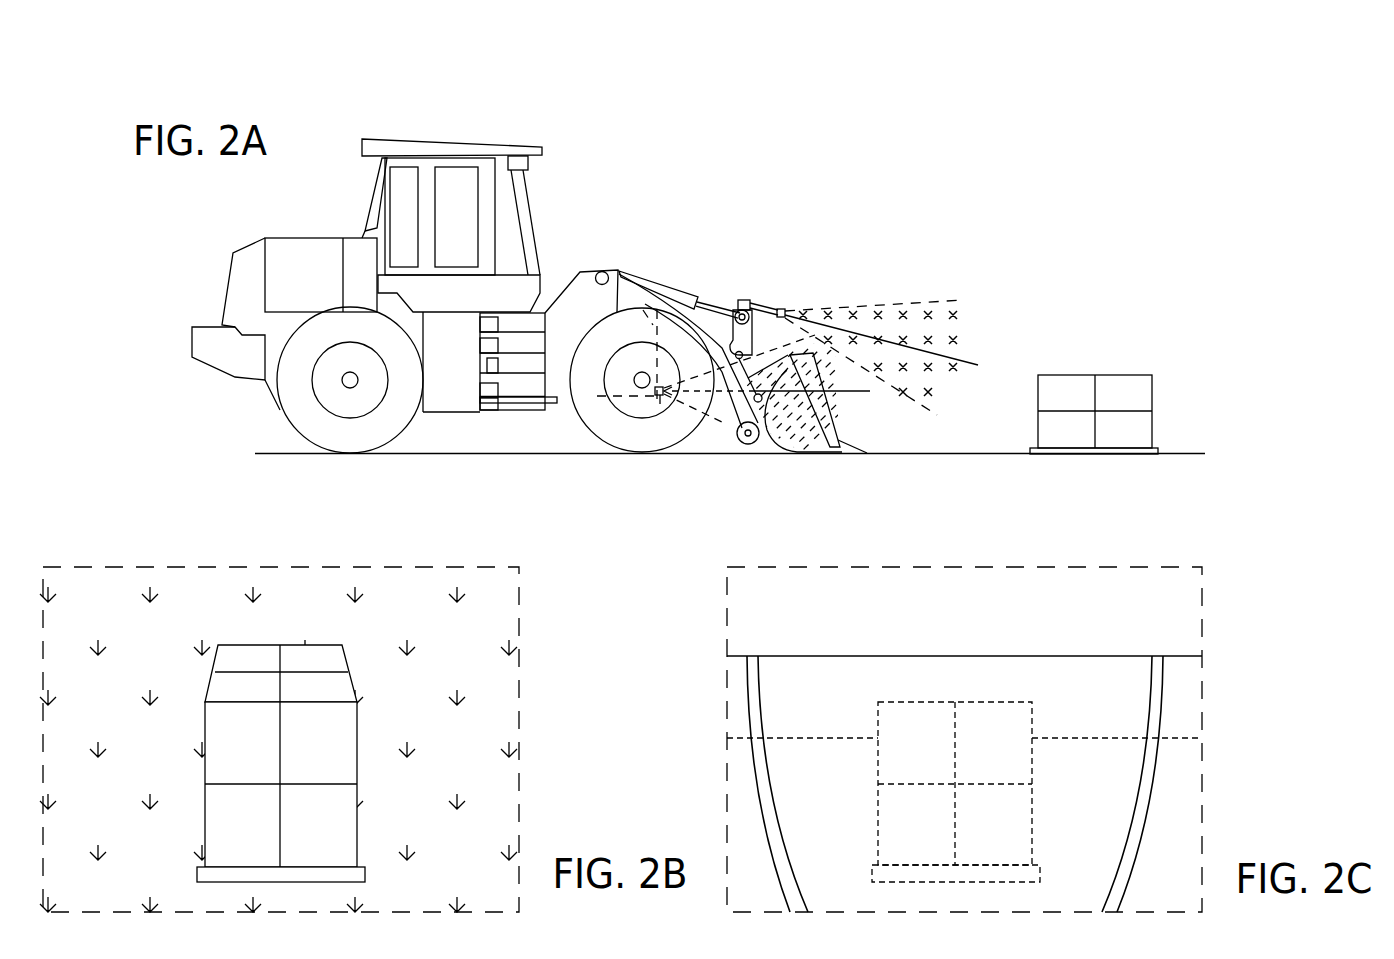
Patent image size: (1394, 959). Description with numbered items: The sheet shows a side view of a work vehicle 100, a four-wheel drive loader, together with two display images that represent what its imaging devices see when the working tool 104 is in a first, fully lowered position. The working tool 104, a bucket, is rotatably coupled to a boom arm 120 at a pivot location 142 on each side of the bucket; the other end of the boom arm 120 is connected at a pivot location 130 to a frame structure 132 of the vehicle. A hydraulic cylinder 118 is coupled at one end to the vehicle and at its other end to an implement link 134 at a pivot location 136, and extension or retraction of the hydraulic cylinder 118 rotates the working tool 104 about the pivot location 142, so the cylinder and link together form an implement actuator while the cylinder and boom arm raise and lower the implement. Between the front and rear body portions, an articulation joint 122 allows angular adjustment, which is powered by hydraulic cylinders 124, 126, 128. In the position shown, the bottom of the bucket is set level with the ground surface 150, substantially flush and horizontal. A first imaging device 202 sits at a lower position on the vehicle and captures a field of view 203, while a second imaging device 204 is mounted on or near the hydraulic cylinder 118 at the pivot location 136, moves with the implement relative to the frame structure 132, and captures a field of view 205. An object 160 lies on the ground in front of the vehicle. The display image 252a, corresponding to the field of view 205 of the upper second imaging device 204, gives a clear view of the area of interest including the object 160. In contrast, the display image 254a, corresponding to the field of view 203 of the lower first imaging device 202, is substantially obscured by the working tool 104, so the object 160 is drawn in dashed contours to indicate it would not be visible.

In FIG. 2A, the work vehicle 100 is at (632, 68).
In FIG. 2A, the working tool 104 is at (800, 453).
In FIG. 2A, the hydraulic cylinder 118 is at (653, 278).
In FIG. 2A, the boom arm 120 is at (732, 425).
In FIG. 2A, the articulation joint 122 is at (525, 428).
In FIG. 2A, the hydraulic cylinder 124 is at (517, 402).
In FIG. 2A, the hydraulic cylinder 126 is at (522, 360).
In FIG. 2A, the hydraulic cylinder 128 is at (523, 330).
In FIG. 2A, the pivot location 130 is at (598, 266).
In FIG. 2A, the frame structure 132 is at (622, 265).
In FIG. 2A, the implement link 134 is at (708, 296).
In FIG. 2A, the pivot location 136 is at (739, 298).
In FIG. 2A, the pivot location 142 is at (748, 444).
In FIG. 2A, the ground surface 150 is at (1185, 447).
In FIG. 2A, the object 160 is at (1115, 375).
In FIG. 2A, the first imaging device 202 is at (657, 405).
In FIG. 2A, the field of view 203 is at (845, 412).
In FIG. 2A, the second imaging device 204 is at (780, 306).
In FIG. 2A, the field of view 205 is at (913, 307).
In FIG. 2B, the display image 252a is at (83, 564).
In FIG. 2C, the display image 254a is at (1202, 617).